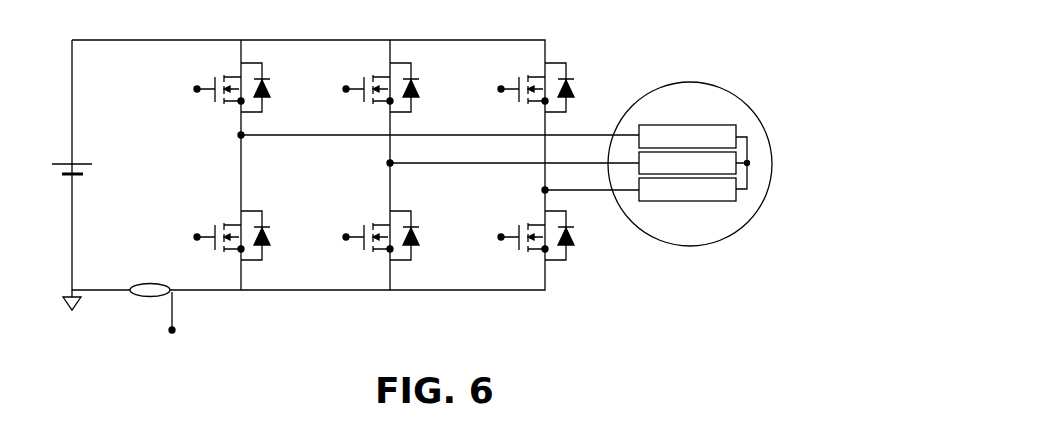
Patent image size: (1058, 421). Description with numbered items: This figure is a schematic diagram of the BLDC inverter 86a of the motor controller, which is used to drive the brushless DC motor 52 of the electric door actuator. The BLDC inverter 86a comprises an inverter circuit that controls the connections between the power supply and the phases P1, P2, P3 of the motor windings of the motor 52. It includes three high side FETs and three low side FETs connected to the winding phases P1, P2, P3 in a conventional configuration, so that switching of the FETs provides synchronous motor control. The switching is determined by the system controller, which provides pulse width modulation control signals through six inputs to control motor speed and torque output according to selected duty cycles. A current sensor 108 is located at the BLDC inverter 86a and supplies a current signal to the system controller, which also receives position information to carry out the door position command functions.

The BLDC inverter 86a is at (64, 63).
The current sensor 108 is at (155, 297).
The brushless DC motor 52 is at (723, 240).
The phase P1 is at (728, 131).
The phase P2 is at (728, 157).
The phase P3 is at (730, 200).